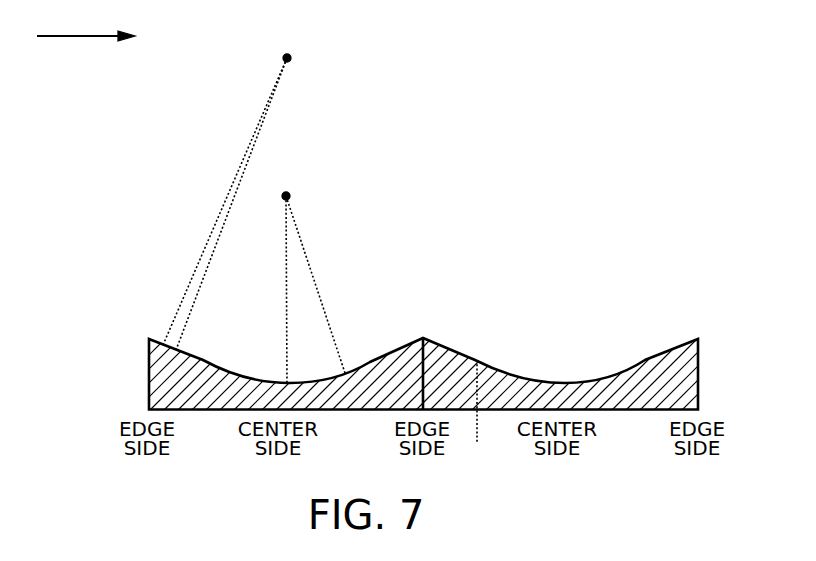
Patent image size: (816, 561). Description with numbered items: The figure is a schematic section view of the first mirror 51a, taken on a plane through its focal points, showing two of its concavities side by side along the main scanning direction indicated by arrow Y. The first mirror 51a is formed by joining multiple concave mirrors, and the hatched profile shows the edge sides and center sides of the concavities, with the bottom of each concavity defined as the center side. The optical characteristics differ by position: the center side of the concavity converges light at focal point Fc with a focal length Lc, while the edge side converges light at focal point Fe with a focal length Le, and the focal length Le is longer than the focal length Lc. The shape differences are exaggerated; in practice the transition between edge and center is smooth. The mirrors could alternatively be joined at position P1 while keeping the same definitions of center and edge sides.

The first mirror 51a is at (411, 372).
The focal point of the edge side Fe is at (299, 49).
The focal point of the center side Fc is at (299, 187).
The focal length of the edge side Le is at (225, 204).
The focal length of the center side Lc is at (304, 289).
The position P1 is at (477, 414).
The Y direction Y is at (86, 46).